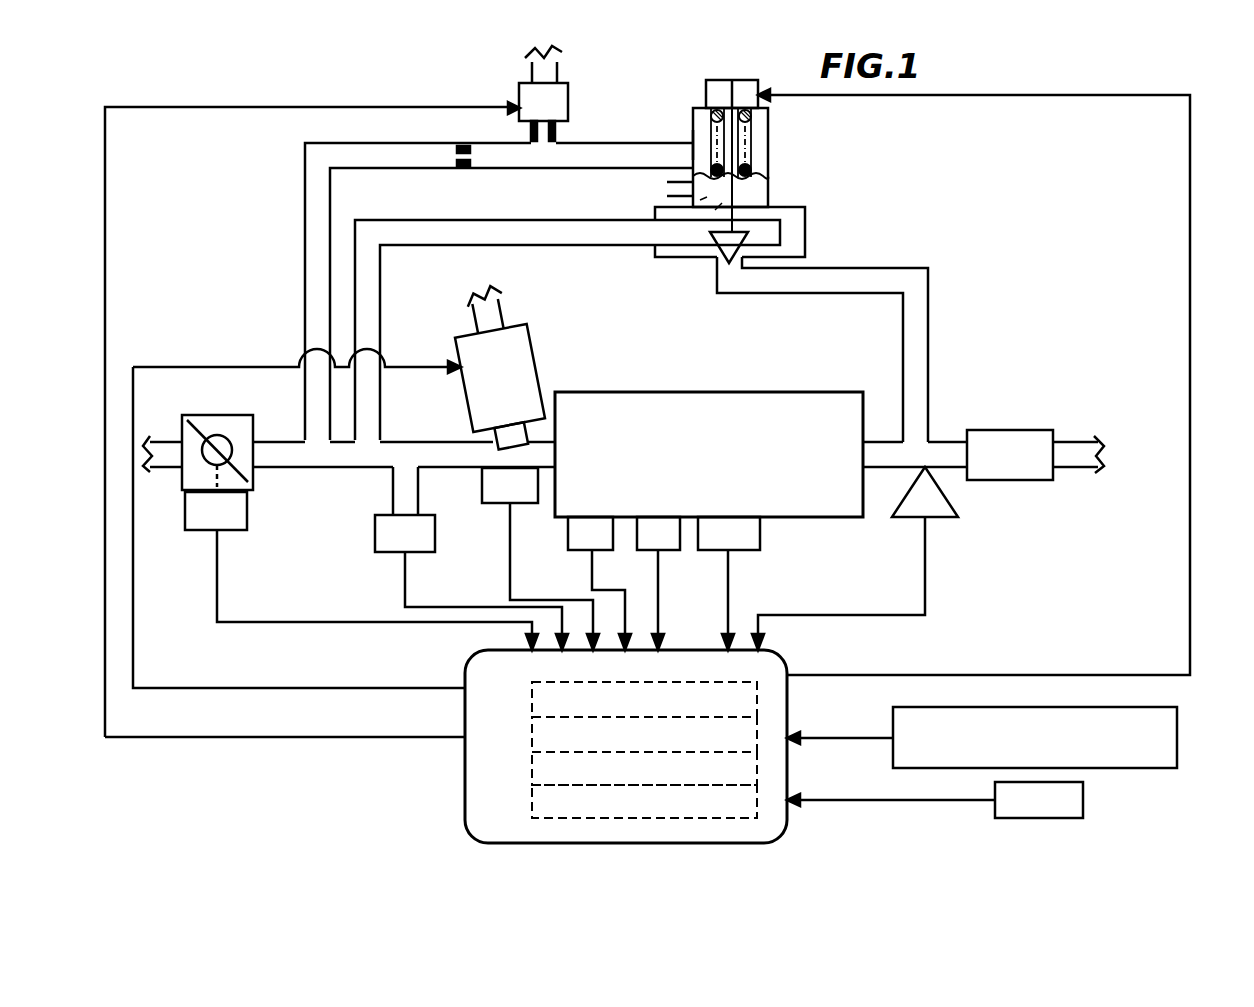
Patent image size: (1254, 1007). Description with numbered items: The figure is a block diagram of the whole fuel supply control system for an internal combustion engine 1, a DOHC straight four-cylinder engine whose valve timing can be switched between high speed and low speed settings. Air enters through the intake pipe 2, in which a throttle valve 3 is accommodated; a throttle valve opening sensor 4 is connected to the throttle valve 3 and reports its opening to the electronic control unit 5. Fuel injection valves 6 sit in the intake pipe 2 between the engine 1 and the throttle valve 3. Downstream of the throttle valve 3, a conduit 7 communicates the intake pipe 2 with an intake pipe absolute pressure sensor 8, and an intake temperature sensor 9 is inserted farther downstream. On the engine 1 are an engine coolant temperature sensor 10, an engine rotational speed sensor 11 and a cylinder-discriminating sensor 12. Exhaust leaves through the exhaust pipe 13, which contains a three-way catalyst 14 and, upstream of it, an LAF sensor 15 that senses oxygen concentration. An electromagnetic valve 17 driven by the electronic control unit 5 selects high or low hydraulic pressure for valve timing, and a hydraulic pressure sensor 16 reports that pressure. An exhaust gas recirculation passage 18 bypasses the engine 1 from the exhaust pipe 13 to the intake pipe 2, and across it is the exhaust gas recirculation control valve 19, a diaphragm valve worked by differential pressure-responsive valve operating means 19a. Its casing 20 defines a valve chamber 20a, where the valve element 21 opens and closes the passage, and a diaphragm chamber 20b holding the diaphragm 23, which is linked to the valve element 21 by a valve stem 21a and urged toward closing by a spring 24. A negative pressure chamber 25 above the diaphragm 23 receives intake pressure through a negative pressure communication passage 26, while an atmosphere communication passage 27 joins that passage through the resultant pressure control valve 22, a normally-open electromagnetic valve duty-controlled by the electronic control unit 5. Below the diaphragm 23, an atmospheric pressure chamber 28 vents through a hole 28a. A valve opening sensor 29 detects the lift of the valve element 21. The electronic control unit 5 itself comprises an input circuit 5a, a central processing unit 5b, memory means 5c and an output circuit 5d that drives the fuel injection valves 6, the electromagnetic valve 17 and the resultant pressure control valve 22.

The internal combustion engine 1 is at (793, 392).
The intake pipe 2 is at (413, 440).
The throttle valve 3 is at (210, 418).
The throttle valve opening sensor 4 is at (232, 532).
The electronic control unit 5 is at (465, 790).
The input circuit 5a is at (760, 688).
The central processing unit 5b is at (758, 727).
The memory means 5c is at (758, 780).
The output circuit 5d is at (760, 810).
The fuel injection valve 6 is at (535, 350).
The conduit 7 is at (420, 488).
The intake pipe absolute pressure sensor 8 is at (435, 530).
The intake temperature sensor 9 is at (522, 506).
The engine coolant temperature sensor 10 is at (600, 553).
The engine rotational speed sensor 11 is at (665, 553).
The cylinder-discriminating sensor 12 is at (742, 553).
The exhaust pipe 13 is at (880, 470).
The three-way catalyst 14 is at (980, 430).
The LAF sensor 15 is at (938, 520).
The hydraulic pressure sensor 16 is at (1083, 800).
The electromagnetic valve 17 is at (1177, 745).
The exhaust gas recirculation passage 18 is at (497, 218).
The exhaust gas recirculation control valve 19 is at (736, 175).
The valve operating means 19a is at (693, 130).
The casing 20 is at (710, 258).
The valve chamber 20a is at (805, 232).
The diaphragm chamber 20b is at (768, 140).
The valve element 21 is at (790, 243).
The valve stem 21a is at (722, 203).
The resultant pressure control valve 22 is at (568, 105).
The diaphragm 23 is at (762, 172).
The spring 24 is at (768, 120).
The negative pressure chamber 25 is at (695, 108).
The negative pressure communication passage 26 is at (305, 247).
The atmosphere communication passage 27 is at (560, 66).
The atmospheric pressure chamber 28 is at (707, 197).
The hole 28a is at (678, 182).
The valve opening sensor 29 is at (745, 83).